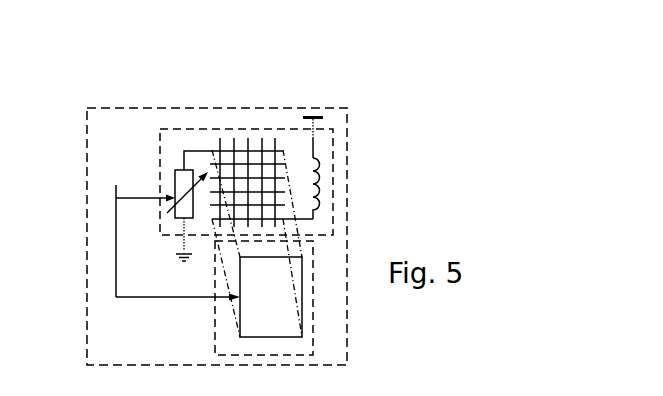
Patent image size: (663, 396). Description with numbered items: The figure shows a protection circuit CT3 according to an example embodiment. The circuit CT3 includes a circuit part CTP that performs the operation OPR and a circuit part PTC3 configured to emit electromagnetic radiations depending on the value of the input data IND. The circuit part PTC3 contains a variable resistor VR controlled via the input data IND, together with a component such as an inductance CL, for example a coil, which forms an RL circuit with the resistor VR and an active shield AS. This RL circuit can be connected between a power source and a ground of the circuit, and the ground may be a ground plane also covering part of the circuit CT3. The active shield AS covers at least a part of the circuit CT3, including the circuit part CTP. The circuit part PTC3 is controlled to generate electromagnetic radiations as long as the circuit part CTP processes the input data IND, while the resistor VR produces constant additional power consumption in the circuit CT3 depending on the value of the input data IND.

The circuit CT3 is at (347, 108).
The circuit part PTC3 is at (332, 128).
The circuit part CTP is at (215, 347).
The operation OPR is at (288, 307).
The active shield AS is at (249, 146).
The inductance CL is at (321, 185).
The variable resistor VR is at (175, 171).
The input data IND is at (168, 231).